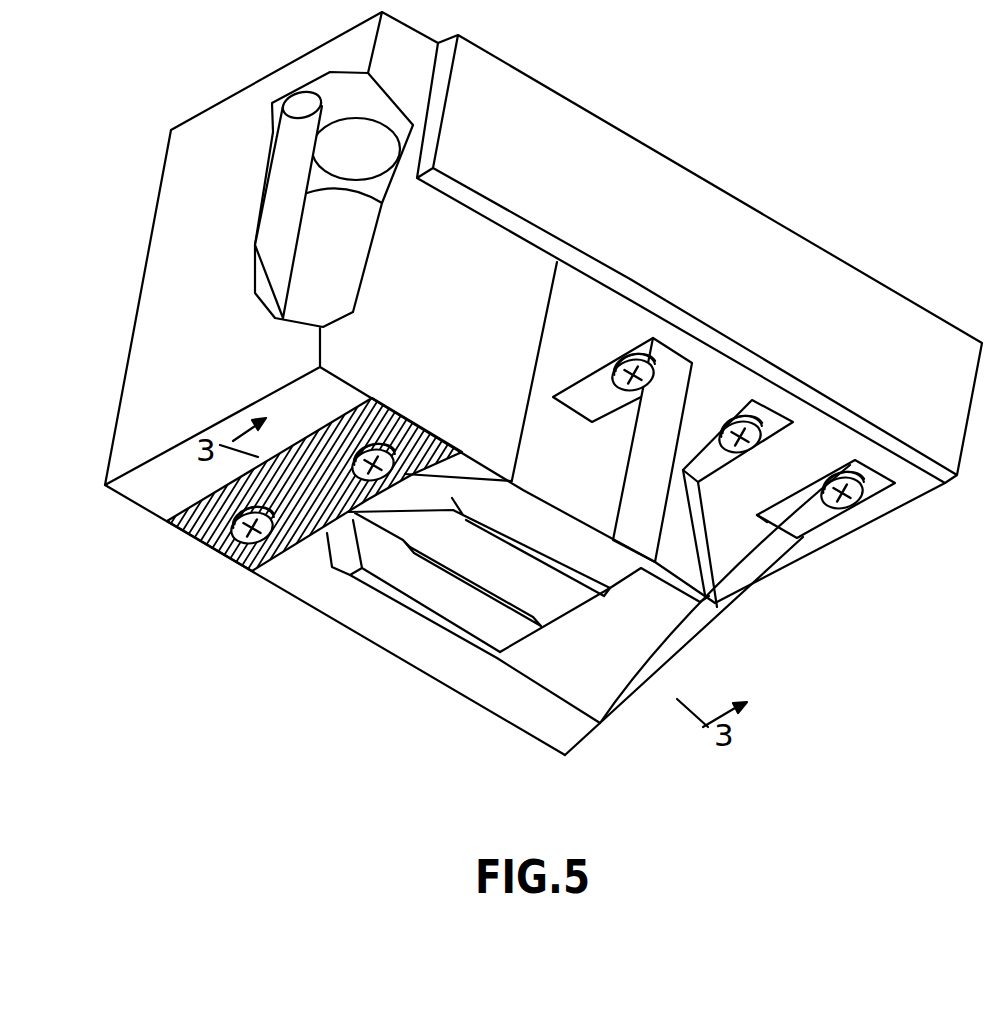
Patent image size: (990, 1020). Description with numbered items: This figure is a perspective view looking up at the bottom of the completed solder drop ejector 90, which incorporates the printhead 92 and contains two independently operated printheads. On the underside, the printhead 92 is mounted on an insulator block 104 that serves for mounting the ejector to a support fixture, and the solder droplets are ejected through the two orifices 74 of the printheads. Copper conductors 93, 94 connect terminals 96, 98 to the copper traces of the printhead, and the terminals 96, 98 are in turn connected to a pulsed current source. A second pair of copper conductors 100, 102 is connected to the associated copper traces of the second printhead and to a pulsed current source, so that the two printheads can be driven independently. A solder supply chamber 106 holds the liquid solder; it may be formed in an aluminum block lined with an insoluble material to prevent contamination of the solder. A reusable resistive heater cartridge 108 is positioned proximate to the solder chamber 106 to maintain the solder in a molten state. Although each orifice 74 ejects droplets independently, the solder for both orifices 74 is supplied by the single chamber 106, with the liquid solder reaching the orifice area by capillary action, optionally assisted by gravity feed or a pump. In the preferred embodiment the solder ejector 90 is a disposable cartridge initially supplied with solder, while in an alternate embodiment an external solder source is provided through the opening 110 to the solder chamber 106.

The solder drop ejector 90 is at (800, 136).
The printhead 92 is at (207, 548).
The copper conductor 93 is at (392, 637).
The copper conductor 94 is at (508, 632).
The copper conductor 100 is at (563, 598).
The copper conductor 102 is at (619, 568).
The terminal 98 is at (783, 417).
The terminal 96 is at (880, 488).
The insulator block 104 is at (833, 537).
The solder supply chamber 106 is at (312, 258).
The resistive heater cartridge 108 is at (290, 178).
The opening 110 is at (378, 160).
The orifice 74 is at (318, 486).